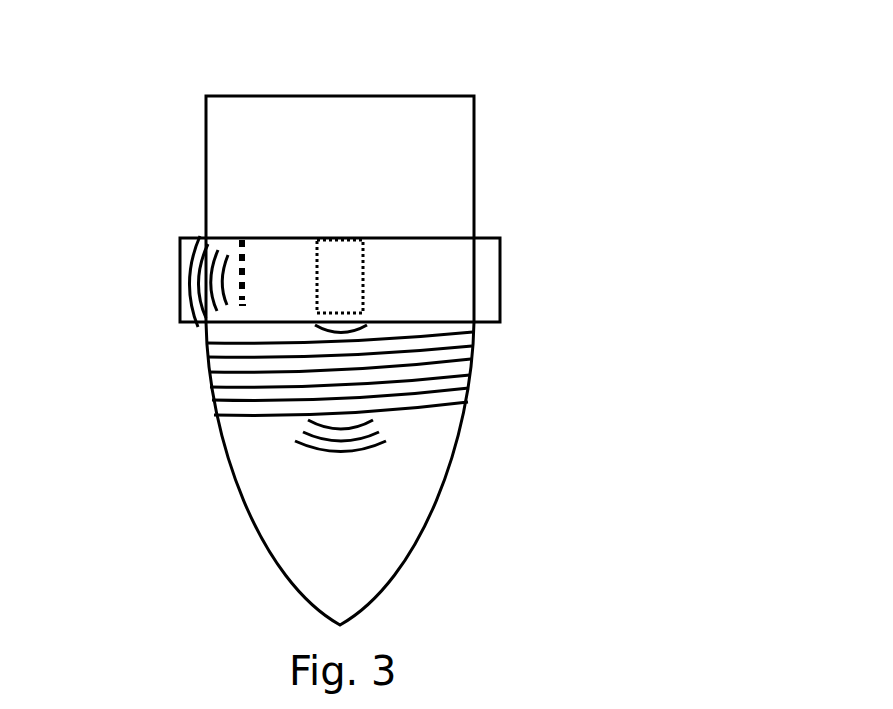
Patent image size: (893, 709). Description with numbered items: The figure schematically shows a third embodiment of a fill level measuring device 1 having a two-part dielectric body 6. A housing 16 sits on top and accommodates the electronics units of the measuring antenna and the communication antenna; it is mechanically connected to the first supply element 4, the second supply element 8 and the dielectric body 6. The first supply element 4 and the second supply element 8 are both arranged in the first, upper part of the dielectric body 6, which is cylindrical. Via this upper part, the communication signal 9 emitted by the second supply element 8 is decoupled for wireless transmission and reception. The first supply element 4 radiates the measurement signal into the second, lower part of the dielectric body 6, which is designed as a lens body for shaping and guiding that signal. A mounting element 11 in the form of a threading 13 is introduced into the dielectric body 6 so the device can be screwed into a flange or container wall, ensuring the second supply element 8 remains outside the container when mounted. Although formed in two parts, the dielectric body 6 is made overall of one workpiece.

The fill level measuring device 1 is at (108, 86).
The first supply element 4 is at (363, 293).
The dielectric body 6 is at (452, 498).
The second supply element 8 is at (240, 262).
The communication signal 9 is at (148, 261).
The mounting element 11 is at (456, 391).
The threading 13 is at (467, 405).
The housing 16 is at (478, 145).